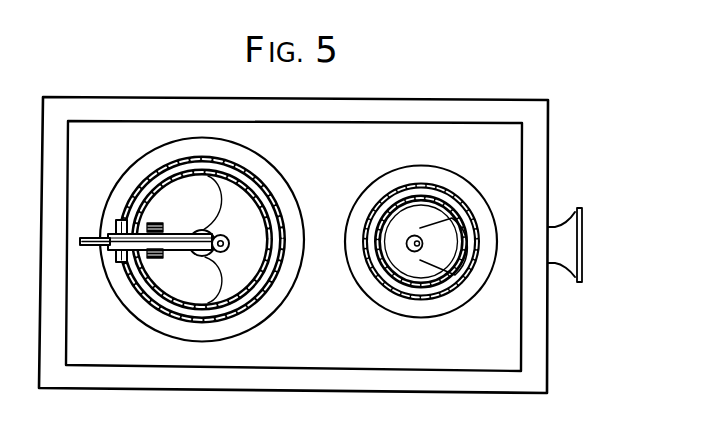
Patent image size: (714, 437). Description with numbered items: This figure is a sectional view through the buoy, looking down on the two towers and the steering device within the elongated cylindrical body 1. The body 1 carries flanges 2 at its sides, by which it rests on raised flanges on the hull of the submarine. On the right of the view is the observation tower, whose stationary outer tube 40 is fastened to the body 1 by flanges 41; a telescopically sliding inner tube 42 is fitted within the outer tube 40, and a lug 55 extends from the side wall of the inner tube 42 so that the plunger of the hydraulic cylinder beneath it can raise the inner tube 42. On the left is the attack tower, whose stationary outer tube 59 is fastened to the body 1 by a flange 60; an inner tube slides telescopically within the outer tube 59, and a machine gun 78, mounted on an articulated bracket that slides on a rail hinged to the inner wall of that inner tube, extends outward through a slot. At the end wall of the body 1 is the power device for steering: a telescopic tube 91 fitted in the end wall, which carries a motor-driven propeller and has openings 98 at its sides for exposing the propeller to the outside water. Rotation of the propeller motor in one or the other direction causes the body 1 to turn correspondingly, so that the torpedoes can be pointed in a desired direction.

The elongated cylindrical body 1 is at (433, 132).
The flanges 2 is at (510, 100).
The tube 40 is at (390, 195).
The flanges 41 is at (470, 189).
The inner tube 42 is at (383, 268).
The lug 55 is at (437, 252).
The stationary outer tube 59 is at (246, 174).
The flange 60 is at (273, 173).
The machine gun 78 is at (88, 237).
The telescopic tube 91 is at (572, 238).
The openings 98 is at (558, 223).